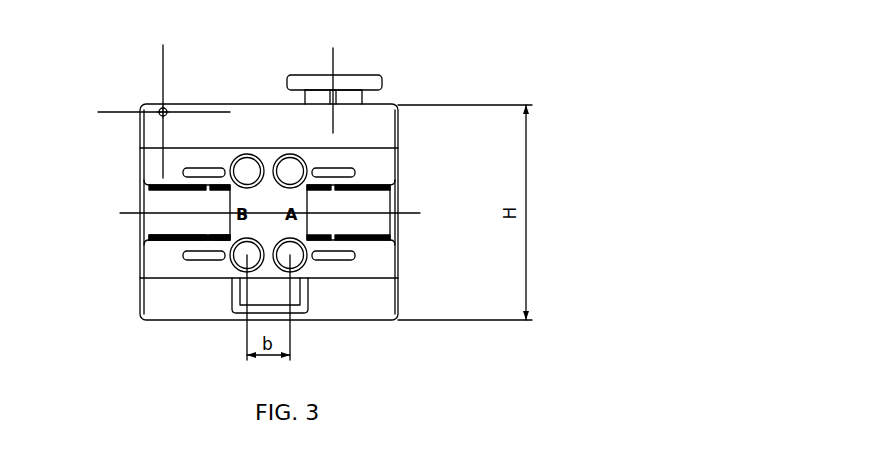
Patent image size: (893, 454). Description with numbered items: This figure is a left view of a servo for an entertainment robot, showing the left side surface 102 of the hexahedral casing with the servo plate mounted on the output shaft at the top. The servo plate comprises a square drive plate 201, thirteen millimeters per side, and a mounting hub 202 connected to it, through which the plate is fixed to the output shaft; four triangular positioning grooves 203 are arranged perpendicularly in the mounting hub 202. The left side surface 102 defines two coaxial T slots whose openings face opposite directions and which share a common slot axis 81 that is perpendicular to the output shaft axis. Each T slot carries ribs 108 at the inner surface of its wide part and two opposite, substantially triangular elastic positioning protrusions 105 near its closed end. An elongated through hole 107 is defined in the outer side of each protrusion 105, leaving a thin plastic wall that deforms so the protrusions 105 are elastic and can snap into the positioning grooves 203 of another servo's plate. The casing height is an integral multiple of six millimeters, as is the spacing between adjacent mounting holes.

The left side surface 102 is at (162, 168).
The elastic positioning protrusion 105 is at (200, 236).
The rib 108 is at (163, 240).
The axis of the T slots of the left side surface 81 is at (387, 214).
The elongated through hole 107 is at (335, 257).
The drive plate 201 is at (355, 80).
The mounting hub 202 is at (318, 100).
The positioning groove 203 is at (326, 106).